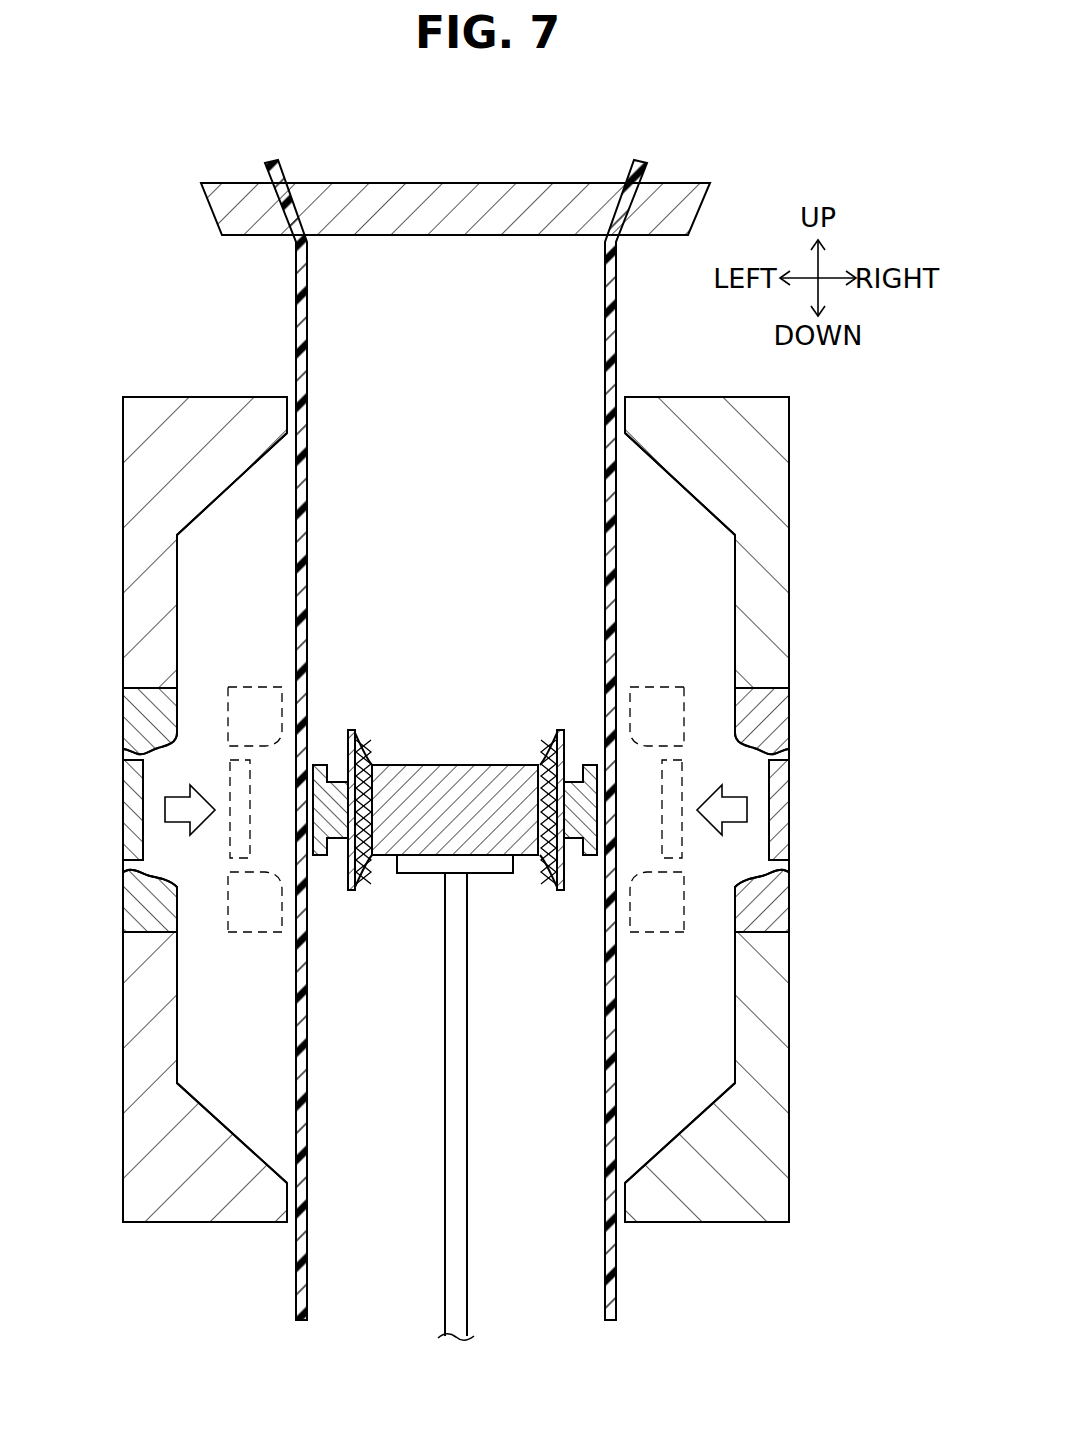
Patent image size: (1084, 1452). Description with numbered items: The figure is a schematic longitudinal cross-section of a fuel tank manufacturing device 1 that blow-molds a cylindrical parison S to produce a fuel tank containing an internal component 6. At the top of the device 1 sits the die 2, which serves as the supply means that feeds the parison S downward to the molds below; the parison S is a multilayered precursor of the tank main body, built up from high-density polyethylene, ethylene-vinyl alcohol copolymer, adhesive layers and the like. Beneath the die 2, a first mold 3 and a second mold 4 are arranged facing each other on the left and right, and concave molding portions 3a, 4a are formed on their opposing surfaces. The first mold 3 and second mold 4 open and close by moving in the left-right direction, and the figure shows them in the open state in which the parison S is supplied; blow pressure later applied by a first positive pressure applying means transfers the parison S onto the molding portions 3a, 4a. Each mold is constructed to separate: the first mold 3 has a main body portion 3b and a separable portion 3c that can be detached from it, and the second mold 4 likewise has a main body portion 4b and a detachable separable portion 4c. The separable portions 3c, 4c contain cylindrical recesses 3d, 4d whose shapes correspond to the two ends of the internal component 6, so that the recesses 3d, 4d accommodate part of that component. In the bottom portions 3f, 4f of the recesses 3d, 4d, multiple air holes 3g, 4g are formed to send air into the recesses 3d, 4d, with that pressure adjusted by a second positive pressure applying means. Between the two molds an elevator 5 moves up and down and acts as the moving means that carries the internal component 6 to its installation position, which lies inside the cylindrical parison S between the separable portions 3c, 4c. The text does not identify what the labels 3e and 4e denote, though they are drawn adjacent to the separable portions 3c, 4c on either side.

The fuel tank manufacturing device 1 is at (742, 148).
The die 2 is at (461, 183).
The first mold 3 is at (176, 784).
The molding portion 3a is at (185, 592).
The main body portion 3b is at (123, 596).
The separable portion 3c is at (123, 722).
The recess 3d is at (165, 772).
The recess 3e is at (188, 876).
The bottom portion 3f is at (143, 808).
The air holes 3g is at (128, 752).
The second mold 4 is at (737, 784).
The molding portion 4a is at (727, 592).
The main body portion 4b is at (789, 596).
The separable portion 4c is at (789, 722).
The recess 4d is at (747, 772).
The recess 4e is at (724, 876).
The bottom portion 4f is at (769, 808).
The air holes 4g is at (784, 752).
The elevator 5 is at (467, 1108).
The internal component 6 is at (461, 765).
The parison S is at (617, 330).